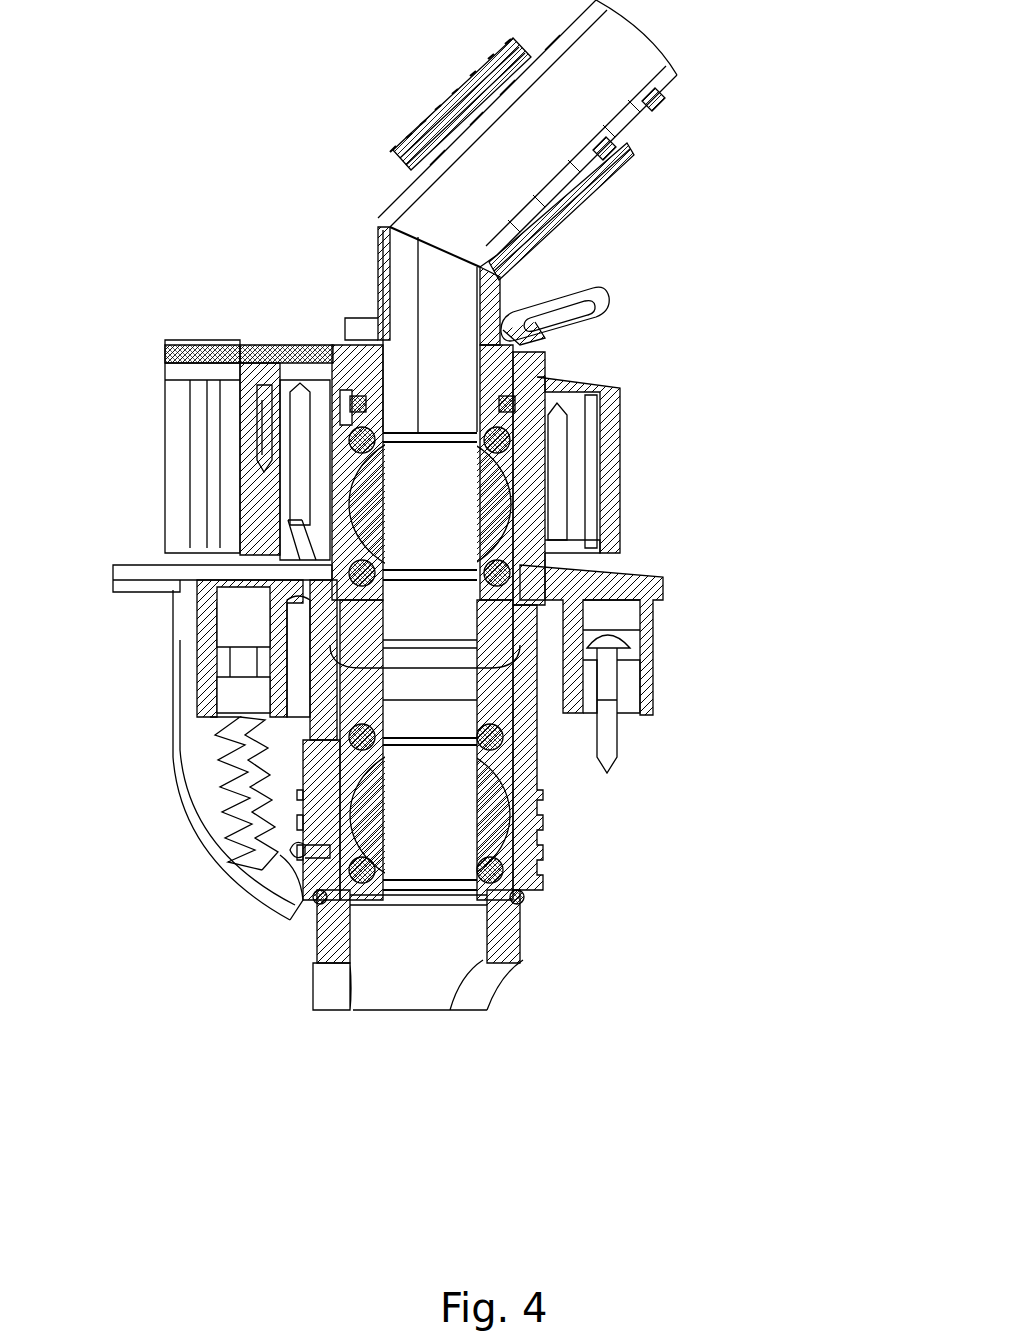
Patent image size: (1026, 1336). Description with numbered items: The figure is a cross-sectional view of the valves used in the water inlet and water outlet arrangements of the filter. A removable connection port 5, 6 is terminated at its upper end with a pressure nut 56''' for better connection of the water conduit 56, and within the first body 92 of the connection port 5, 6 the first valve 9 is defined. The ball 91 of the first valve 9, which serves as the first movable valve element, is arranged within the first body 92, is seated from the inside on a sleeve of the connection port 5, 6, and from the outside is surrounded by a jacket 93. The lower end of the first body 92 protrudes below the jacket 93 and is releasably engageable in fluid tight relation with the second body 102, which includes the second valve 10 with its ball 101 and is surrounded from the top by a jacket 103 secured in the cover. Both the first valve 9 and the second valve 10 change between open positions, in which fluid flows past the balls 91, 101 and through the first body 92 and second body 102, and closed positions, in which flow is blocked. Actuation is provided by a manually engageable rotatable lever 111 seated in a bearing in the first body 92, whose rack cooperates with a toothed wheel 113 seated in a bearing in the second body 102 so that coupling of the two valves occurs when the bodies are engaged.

The connection port 5 is at (601, 216).
The connection port 6 is at (677, 77).
The first valve 9 is at (298, 278).
The second valve 10 is at (283, 963).
The pressure nut 56''' is at (404, 85).
The connection piece 56 is at (404, 85).
The ball 91 is at (628, 423).
The first body 92 is at (490, 495).
The jacket 93 is at (223, 340).
The ball 101 is at (527, 810).
The second body 102 is at (510, 950).
The jacket 103 is at (620, 606).
The lever 111 is at (588, 287).
The toothed wheel 113 is at (223, 847).